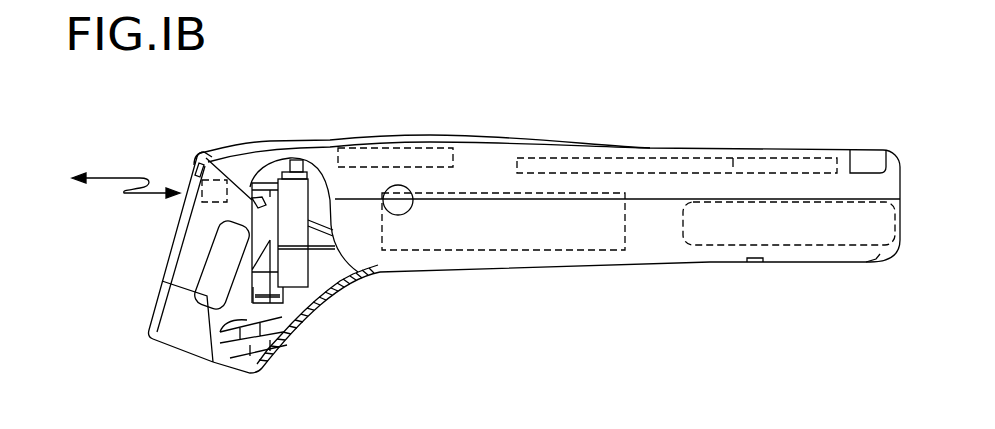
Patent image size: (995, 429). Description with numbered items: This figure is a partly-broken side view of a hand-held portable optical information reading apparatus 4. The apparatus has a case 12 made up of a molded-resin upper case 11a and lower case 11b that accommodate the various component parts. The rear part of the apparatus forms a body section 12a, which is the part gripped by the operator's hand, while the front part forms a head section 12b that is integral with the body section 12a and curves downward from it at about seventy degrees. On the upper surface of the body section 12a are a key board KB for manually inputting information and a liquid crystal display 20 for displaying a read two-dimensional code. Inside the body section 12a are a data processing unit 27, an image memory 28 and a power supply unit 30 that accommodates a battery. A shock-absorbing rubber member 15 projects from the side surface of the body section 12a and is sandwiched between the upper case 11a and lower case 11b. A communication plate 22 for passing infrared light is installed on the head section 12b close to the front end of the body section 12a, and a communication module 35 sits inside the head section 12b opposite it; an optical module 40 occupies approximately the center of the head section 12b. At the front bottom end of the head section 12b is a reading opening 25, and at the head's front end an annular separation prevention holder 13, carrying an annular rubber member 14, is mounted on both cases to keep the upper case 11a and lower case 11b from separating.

The optical information reading apparatus 4 is at (503, 117).
The upper case 11a is at (886, 181).
The lower case 11b is at (826, 252).
The case 12 is at (307, 152).
The body section 12a is at (513, 158).
The head section 12b is at (190, 247).
The separation prevention holder 13 is at (240, 366).
The rubber member 14 is at (180, 333).
The rubber member 15 is at (400, 205).
The liquid crystal display 20 is at (390, 160).
The communication plate 22 is at (189, 177).
The reading opening 25 is at (207, 357).
The data processing unit 27 is at (503, 264).
The image memory 28 is at (548, 240).
The power supply unit 30 is at (727, 248).
The communication module 35 is at (220, 170).
The optical module 40 is at (265, 306).
The key board KB is at (733, 158).